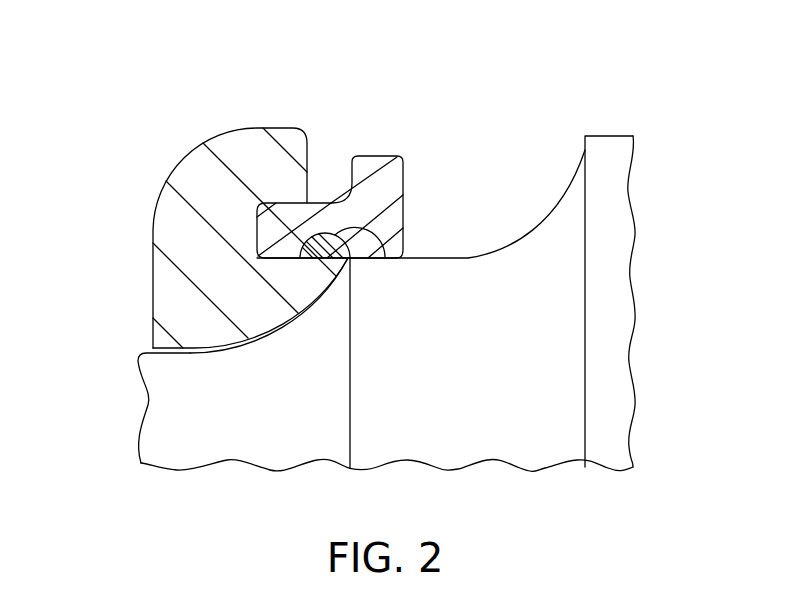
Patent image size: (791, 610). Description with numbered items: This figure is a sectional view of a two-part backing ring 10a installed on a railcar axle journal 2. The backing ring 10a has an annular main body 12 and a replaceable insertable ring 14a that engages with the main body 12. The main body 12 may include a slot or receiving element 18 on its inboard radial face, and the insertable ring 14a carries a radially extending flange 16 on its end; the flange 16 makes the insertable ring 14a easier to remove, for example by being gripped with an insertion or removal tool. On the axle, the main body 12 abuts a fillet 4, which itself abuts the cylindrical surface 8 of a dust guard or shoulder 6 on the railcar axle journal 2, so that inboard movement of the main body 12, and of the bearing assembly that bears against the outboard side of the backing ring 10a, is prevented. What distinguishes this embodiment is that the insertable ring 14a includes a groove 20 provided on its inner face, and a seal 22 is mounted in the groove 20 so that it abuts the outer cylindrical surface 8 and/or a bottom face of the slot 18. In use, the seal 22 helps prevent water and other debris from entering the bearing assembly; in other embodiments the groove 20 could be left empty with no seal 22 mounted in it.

The two-part backing ring 10a is at (106, 103).
The railcar axle journal 2 is at (170, 417).
The fillet 4 is at (248, 347).
The dust guard or shoulder 6 is at (558, 357).
The cylindrical surface 8 is at (447, 258).
The main body 12 is at (196, 180).
The insertable ring 14a is at (316, 217).
The flange 16 is at (377, 167).
The slot or receiving element 18 is at (254, 263).
The groove 20 is at (353, 201).
The seal 22 is at (350, 265).